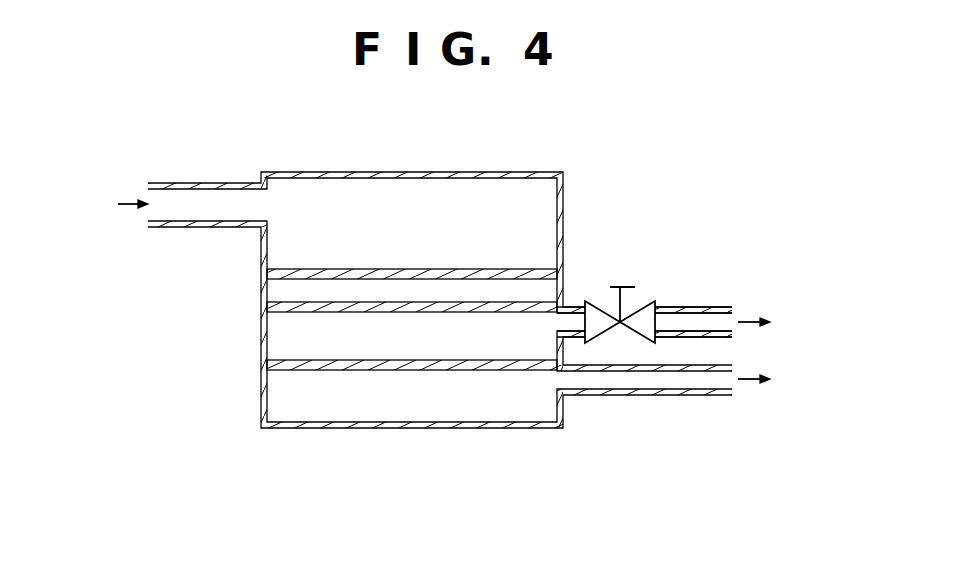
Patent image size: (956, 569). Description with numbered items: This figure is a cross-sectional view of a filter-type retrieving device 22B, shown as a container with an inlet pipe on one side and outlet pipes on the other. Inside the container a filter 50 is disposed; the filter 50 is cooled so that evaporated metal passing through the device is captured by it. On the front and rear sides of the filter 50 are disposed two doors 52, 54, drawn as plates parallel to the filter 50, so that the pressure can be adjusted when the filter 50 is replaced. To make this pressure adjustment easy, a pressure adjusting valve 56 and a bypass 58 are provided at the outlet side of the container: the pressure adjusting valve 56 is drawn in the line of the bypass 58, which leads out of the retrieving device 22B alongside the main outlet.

The filter-type retrieving device 22B is at (564, 234).
The door 52 is at (290, 270).
The filter 50 is at (292, 313).
The door 54 is at (292, 371).
The pressure adjusting valve 56 is at (627, 287).
The bypass 58 is at (683, 307).